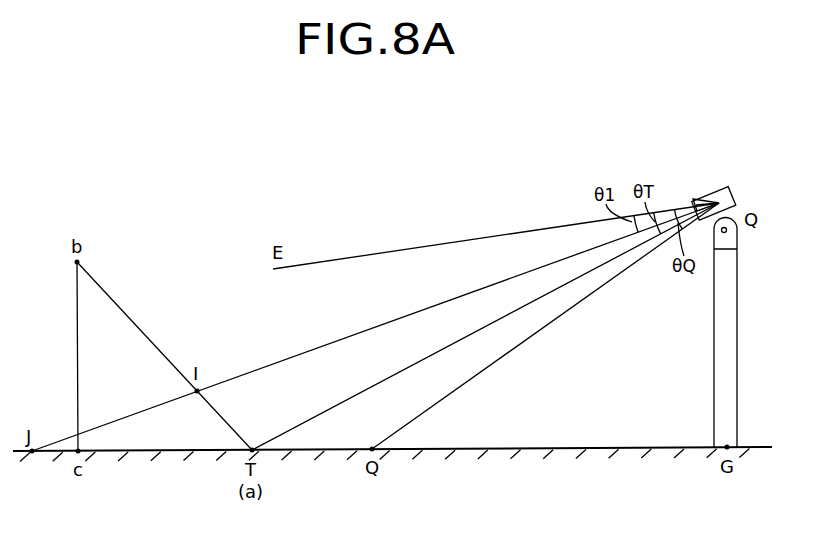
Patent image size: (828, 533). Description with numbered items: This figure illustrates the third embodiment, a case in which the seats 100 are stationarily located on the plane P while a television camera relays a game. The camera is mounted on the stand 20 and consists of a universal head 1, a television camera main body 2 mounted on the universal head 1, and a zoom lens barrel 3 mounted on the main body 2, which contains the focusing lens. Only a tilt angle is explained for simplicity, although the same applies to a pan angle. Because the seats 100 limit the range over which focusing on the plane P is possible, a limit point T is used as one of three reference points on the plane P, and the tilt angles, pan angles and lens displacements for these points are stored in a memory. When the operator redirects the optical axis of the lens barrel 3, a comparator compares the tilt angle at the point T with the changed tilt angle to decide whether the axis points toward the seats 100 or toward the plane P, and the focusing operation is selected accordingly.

The universal head 1 is at (733, 236).
The television camera main body 2 is at (736, 205).
The zoom lens barrel 3 is at (691, 203).
The stand 20 is at (737, 330).
The seats 100 is at (392, 475).
The plane P is at (435, 452).